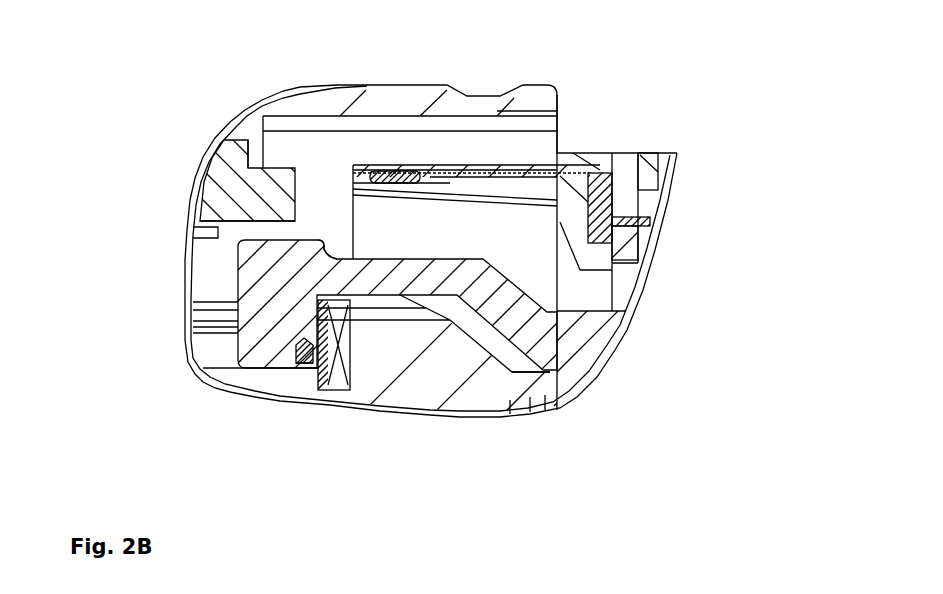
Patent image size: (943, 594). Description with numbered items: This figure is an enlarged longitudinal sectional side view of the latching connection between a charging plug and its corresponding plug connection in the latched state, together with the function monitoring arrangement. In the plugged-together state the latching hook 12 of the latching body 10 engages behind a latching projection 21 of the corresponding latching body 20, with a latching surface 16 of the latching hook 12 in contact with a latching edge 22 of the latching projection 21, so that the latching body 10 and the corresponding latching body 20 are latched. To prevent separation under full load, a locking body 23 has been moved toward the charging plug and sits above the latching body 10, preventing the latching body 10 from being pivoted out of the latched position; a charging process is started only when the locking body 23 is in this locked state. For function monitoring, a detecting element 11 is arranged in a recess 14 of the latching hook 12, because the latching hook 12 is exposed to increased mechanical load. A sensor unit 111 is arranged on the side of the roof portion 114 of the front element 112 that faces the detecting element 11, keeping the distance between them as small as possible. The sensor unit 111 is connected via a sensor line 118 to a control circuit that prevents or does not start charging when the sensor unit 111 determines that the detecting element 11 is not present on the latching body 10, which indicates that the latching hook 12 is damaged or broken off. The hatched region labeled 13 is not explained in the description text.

The latching body 10 is at (448, 257).
The detecting element 11 is at (304, 364).
The latching hook 12 is at (285, 335).
The housing body portion 13 is at (587, 342).
The recess 14 is at (295, 352).
The latching surface 16 is at (320, 320).
The corresponding latching body 20 is at (495, 388).
The latching projection 21 is at (418, 373).
The latching edge 22 is at (327, 360).
The locking body 23 is at (223, 182).
The sensor unit 111 is at (390, 176).
The front element 112 is at (580, 152).
The roof portion 114 is at (472, 167).
The sensor line 118 is at (532, 175).